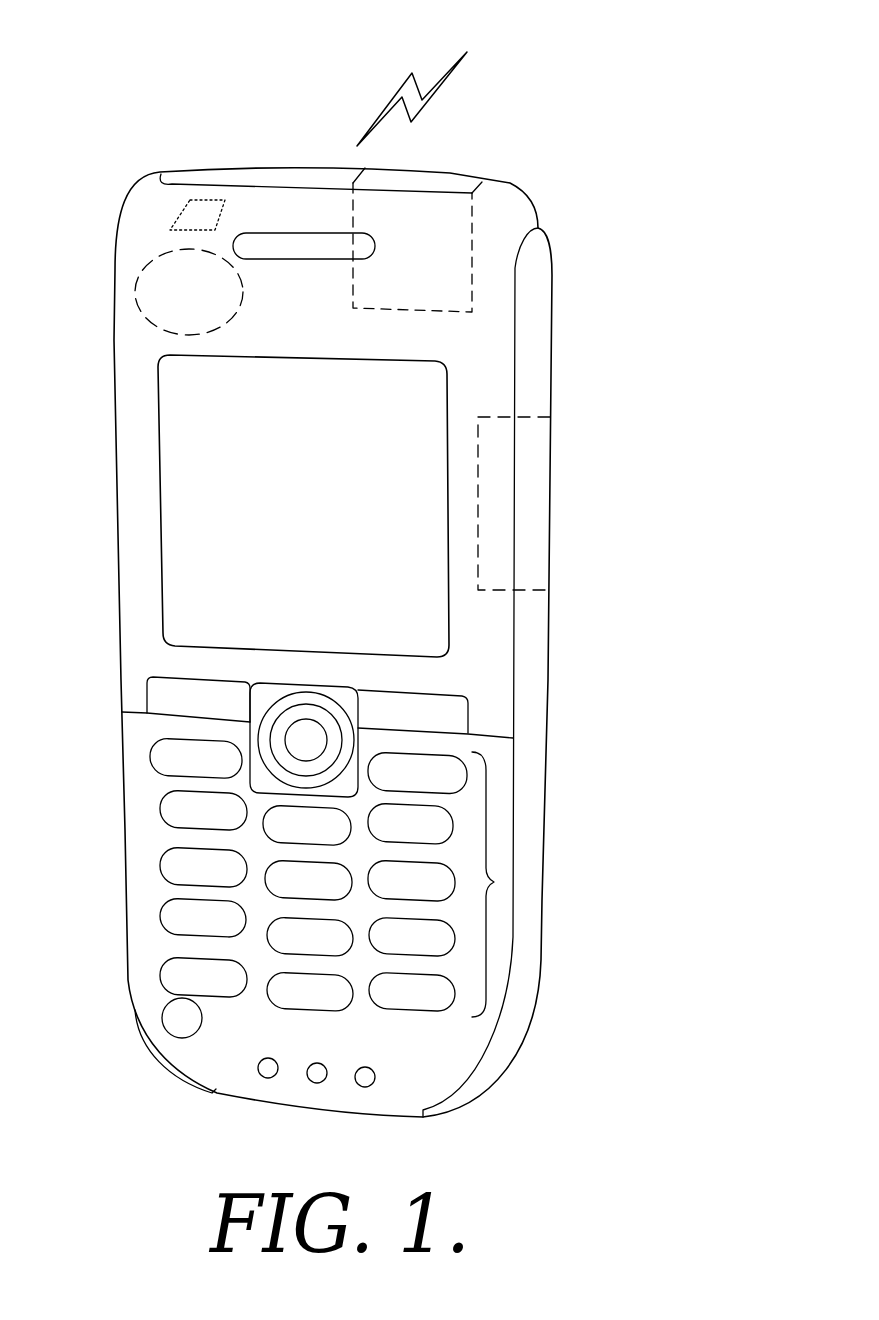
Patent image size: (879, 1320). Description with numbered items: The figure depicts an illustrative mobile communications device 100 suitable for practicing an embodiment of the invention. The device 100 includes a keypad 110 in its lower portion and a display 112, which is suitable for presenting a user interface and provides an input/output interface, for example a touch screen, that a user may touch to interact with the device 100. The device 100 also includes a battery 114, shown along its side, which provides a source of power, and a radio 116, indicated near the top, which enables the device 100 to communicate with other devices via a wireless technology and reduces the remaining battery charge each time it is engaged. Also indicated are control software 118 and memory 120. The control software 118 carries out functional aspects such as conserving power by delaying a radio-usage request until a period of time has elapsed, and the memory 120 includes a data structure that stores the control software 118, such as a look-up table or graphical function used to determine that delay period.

The mobile communications device 100 is at (125, 828).
The keypad 110 is at (494, 882).
The display 112 is at (182, 492).
The battery 114 is at (552, 503).
The radio 116 is at (472, 200).
The control software 118 is at (137, 286).
The memory 120 is at (197, 195).